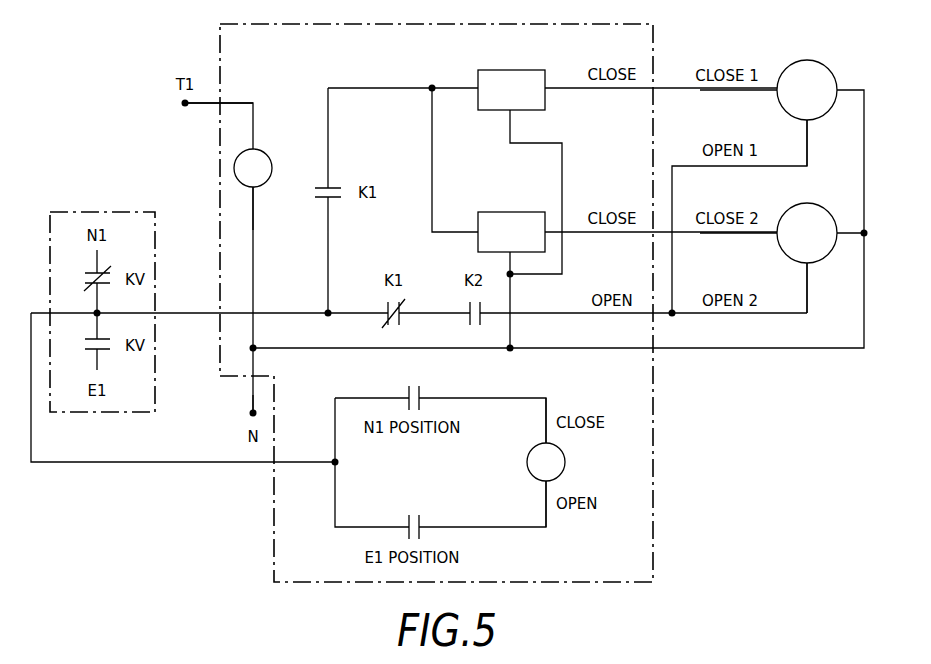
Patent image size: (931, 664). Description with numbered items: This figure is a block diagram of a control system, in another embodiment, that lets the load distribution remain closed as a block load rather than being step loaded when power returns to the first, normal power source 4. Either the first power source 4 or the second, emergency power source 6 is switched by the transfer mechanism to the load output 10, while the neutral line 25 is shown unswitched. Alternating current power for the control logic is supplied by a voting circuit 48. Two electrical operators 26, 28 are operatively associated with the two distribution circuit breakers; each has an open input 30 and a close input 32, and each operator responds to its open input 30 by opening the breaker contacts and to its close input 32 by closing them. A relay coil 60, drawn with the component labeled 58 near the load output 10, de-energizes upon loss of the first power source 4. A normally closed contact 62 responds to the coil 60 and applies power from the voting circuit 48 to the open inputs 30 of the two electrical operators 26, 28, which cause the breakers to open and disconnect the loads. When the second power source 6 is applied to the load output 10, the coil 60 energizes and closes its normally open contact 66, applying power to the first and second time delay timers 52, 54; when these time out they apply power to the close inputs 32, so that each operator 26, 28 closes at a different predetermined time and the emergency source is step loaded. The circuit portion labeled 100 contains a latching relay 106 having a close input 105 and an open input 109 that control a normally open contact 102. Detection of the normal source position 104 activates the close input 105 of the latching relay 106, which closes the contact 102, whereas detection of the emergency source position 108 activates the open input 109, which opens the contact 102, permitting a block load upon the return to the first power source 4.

The load output 10 is at (197, 108).
The neutral line 25 is at (250, 397).
The electrical operator 26 is at (824, 66).
The electrical operator 28 is at (824, 211).
The open input 30 is at (811, 268).
The close input 32 is at (777, 238).
The voting circuit 48 is at (81, 212).
The first power source 4 is at (95, 257).
The second power source 6 is at (95, 362).
The time delay timer 52 is at (497, 69).
The time delay timer 54 is at (497, 211).
The relay coil K1 58 is at (269, 150).
The relay coil 60 is at (256, 189).
The normally closed contact 62 is at (384, 305).
The normally open contact 66 is at (334, 186).
The position control circuit 100 is at (345, 540).
The normally open contact 102 is at (467, 305).
The N1 position 104 is at (407, 393).
The close input 105 is at (540, 446).
The latching relay 106 is at (568, 464).
The E1 position 108 is at (407, 522).
The open input 109 is at (538, 479).